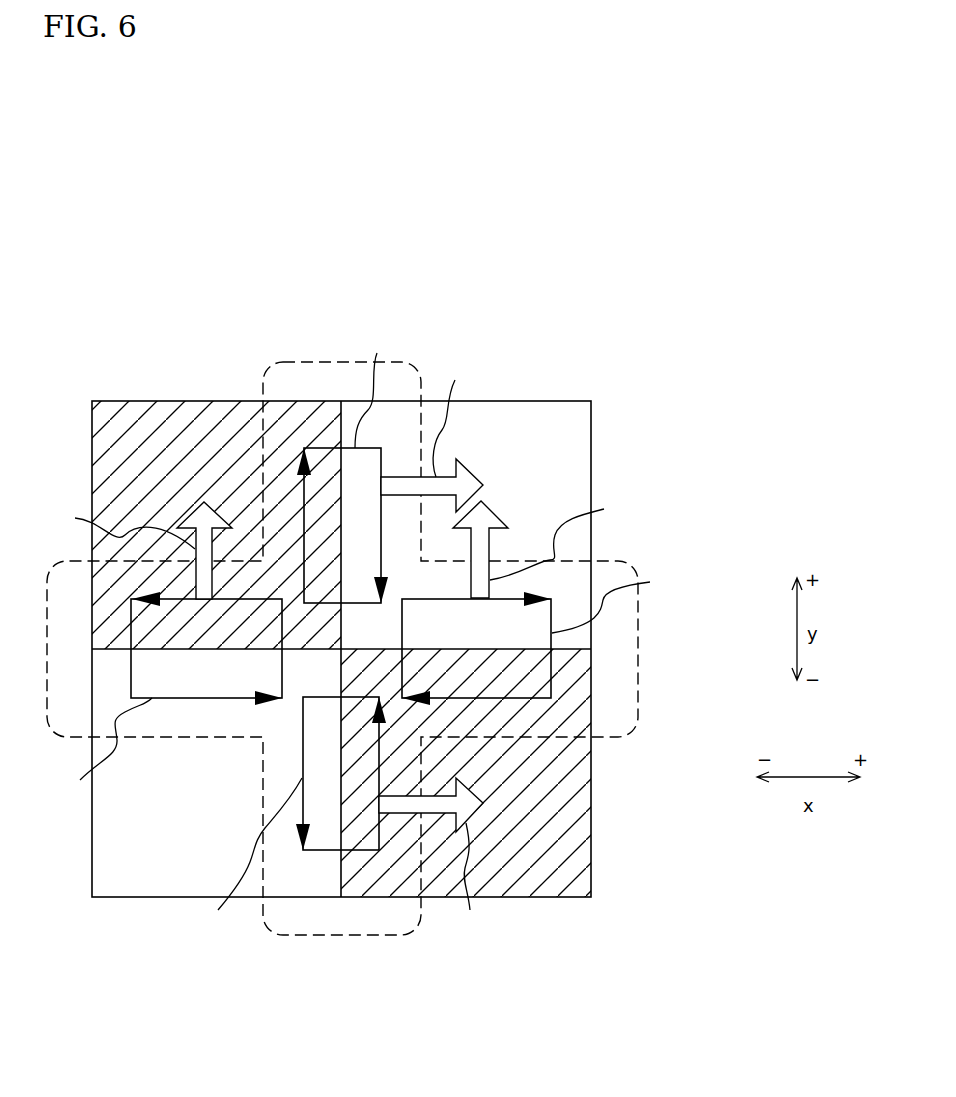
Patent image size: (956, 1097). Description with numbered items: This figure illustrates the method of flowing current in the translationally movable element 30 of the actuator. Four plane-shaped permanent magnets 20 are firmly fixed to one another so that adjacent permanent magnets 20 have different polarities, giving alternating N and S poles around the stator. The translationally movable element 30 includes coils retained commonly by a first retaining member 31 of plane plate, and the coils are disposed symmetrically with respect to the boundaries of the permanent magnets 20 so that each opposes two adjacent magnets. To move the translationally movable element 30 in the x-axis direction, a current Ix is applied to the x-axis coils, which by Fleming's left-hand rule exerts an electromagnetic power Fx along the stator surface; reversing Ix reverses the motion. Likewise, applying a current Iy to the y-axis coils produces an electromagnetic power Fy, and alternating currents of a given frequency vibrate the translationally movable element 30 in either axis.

The permanent magnet 20 is at (100, 447).
The first retaining member 31 is at (640, 672).
The translationally movable element 30 is at (401, 635).